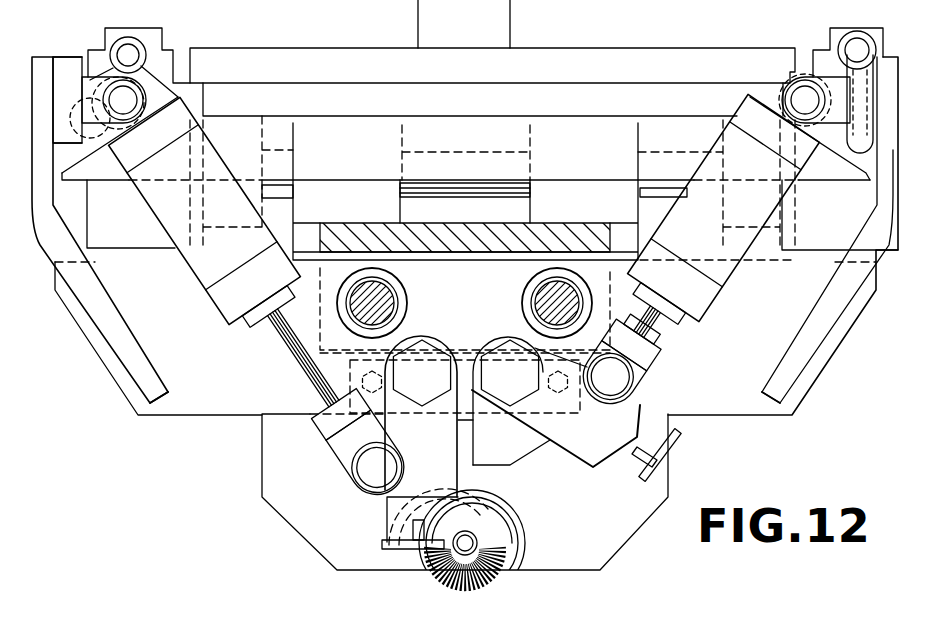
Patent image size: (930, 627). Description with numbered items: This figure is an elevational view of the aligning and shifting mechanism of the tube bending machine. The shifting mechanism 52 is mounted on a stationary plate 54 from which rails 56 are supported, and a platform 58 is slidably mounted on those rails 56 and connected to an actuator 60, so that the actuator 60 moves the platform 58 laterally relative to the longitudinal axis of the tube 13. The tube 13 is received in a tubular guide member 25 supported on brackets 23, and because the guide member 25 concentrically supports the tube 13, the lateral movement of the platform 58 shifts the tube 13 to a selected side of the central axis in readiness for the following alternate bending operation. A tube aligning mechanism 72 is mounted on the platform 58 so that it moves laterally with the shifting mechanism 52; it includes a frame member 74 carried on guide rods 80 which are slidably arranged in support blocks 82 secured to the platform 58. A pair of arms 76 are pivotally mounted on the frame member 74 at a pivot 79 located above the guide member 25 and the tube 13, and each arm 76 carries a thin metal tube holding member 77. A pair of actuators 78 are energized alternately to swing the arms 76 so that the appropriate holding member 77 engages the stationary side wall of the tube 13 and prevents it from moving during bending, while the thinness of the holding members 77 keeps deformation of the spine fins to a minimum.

The tube 13 is at (476, 537).
The brackets 23 is at (266, 500).
The tubular guide member 25 is at (525, 537).
The shifting mechanism 52 is at (672, 46).
The stationary plate 54 is at (262, 58).
The rails 56 is at (530, 197).
The platform 58 is at (497, 250).
The actuator 60 is at (132, 231).
The tube aligning mechanism 72 is at (731, 369).
The frame member 74 is at (737, 416).
The arms 76 is at (387, 515).
The tube holding members 77 is at (442, 571).
The actuators 78 is at (180, 217).
The pivot 79 is at (447, 392).
The guide rods 80 is at (545, 300).
The support blocks 82 is at (280, 328).